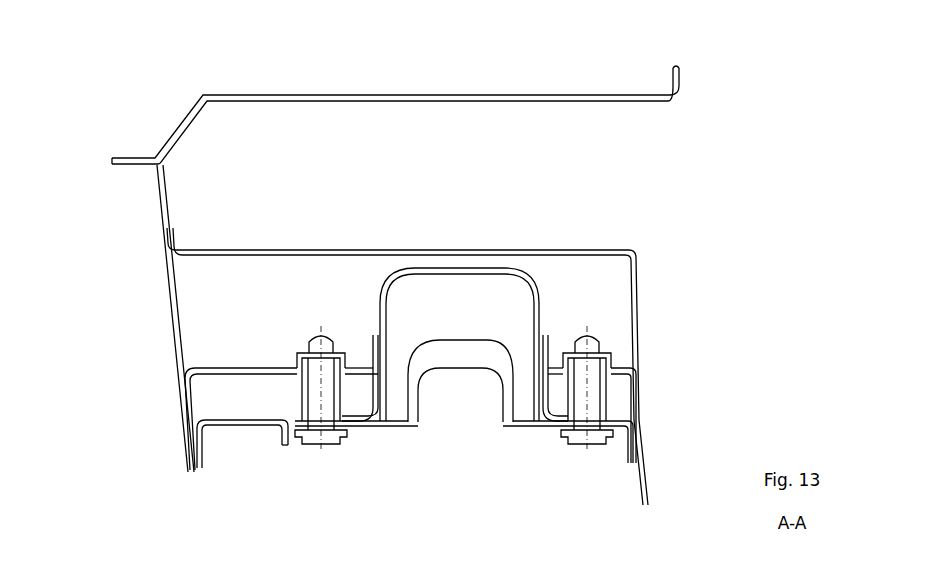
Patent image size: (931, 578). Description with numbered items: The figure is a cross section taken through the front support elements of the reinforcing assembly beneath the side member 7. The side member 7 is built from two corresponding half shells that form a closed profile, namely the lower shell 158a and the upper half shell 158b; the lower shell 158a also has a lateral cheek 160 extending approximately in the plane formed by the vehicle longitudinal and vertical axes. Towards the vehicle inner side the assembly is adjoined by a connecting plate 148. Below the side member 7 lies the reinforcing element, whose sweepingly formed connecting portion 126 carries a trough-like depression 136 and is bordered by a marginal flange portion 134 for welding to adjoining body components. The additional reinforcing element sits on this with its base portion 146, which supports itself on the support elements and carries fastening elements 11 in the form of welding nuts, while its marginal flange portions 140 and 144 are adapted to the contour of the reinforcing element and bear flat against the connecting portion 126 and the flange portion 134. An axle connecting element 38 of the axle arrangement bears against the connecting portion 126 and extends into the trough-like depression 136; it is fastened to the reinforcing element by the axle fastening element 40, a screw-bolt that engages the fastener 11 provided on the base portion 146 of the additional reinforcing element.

The side member 7 is at (395, 144).
The fastening element 11 is at (305, 355).
The axle connecting element 38 is at (383, 430).
The axle fastening element 40 is at (325, 440).
The connecting portion 126 is at (240, 427).
The marginal flange portion 134 is at (635, 448).
The trough-like depression 136 is at (432, 270).
The marginal flange portion 140 is at (378, 333).
The marginal flange portion 144 is at (638, 405).
The base portion 146 is at (255, 368).
The connecting plate 148 is at (166, 278).
The lower shell 158a is at (507, 252).
The half shell 158b is at (350, 97).
The lateral cheek 160 is at (636, 313).